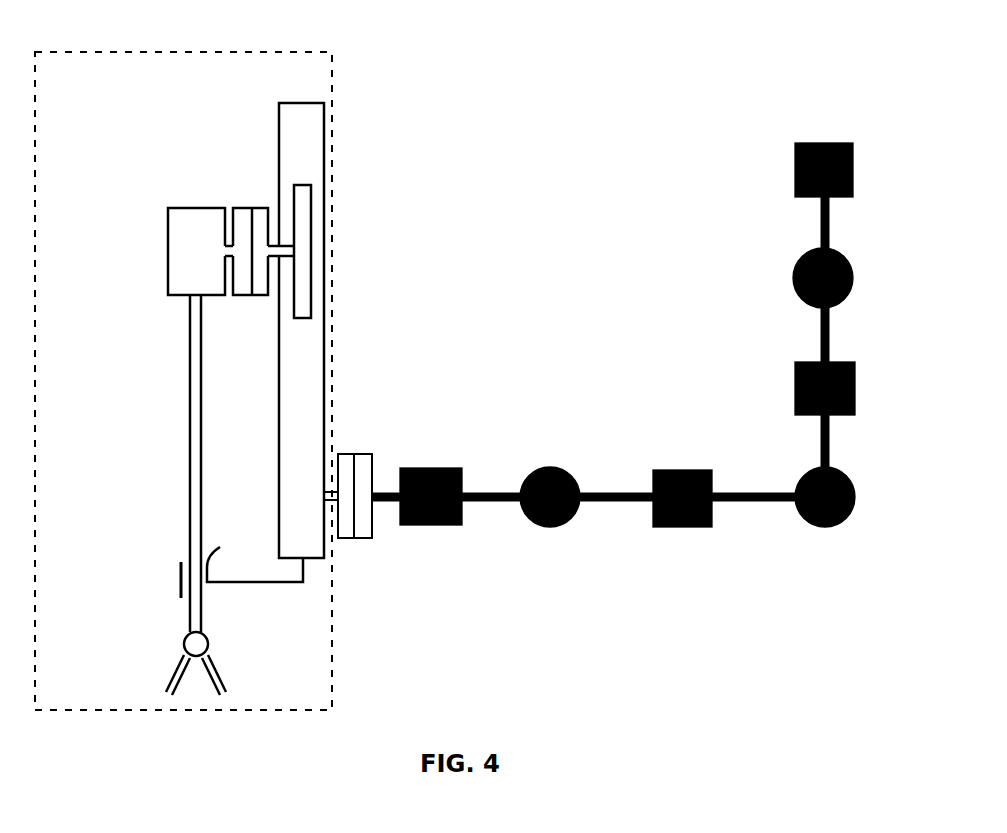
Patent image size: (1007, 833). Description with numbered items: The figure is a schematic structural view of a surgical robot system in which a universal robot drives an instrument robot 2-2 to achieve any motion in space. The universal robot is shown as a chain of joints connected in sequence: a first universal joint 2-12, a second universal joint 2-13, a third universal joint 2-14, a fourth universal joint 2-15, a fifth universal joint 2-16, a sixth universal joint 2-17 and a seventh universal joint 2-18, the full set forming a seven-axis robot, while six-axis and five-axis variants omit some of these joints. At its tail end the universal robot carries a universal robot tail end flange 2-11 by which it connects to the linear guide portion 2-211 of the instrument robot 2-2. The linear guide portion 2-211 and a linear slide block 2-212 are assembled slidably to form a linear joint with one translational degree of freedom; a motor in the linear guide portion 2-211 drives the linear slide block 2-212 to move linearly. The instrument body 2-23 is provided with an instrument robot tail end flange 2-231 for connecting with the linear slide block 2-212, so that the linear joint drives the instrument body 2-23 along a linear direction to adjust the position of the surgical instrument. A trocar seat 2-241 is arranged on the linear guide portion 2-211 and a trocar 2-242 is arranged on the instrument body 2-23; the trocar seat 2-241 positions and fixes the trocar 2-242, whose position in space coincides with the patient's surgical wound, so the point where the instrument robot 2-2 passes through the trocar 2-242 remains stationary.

The instrument robot 2-2 is at (312, 50).
The linear guide portion 2-211 is at (313, 117).
The linear slide block 2-212 is at (293, 190).
The instrument robot tail end flange 2-231 is at (260, 210).
The instrument body 2-23 is at (188, 425).
The trocar seat 2-241 is at (222, 583).
The trocar 2-242 is at (183, 563).
The universal robot tail end flange 2-11 is at (362, 538).
The first universal joint 2-12 is at (428, 525).
The second universal joint 2-13 is at (553, 523).
The third universal joint 2-14 is at (683, 525).
The fourth universal joint 2-15 is at (833, 523).
The fifth universal joint 2-16 is at (853, 388).
The sixth universal joint 2-17 is at (853, 270).
The seventh universal joint 2-18 is at (853, 175).